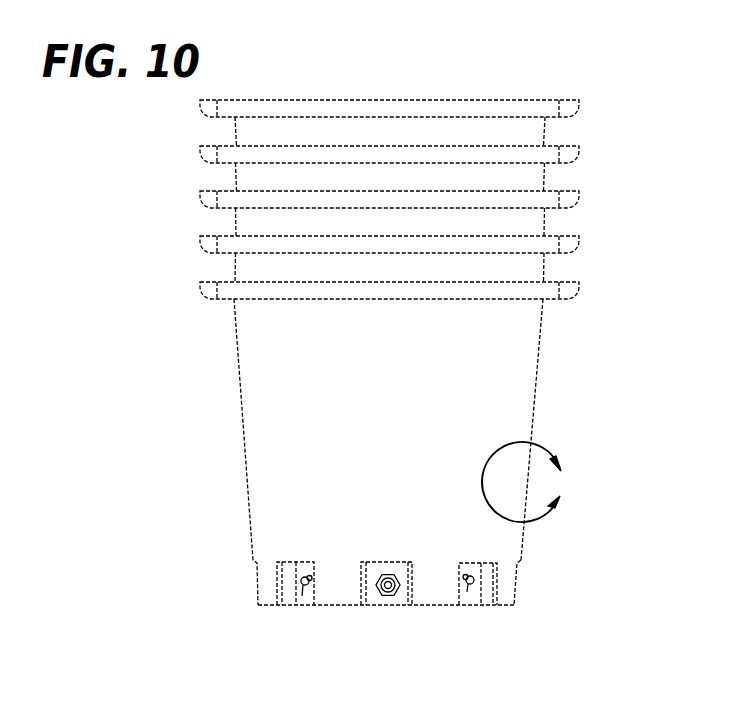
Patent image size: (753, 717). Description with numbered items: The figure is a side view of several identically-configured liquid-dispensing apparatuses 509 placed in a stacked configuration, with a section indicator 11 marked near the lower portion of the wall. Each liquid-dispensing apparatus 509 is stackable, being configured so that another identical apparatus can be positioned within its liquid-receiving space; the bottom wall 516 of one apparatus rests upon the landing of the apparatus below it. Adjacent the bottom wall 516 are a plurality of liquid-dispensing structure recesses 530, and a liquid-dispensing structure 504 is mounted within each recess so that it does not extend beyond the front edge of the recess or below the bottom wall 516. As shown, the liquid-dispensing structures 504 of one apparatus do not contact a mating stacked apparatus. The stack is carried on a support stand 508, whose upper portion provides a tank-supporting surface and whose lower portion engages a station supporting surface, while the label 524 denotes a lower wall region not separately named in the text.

The liquid-dispensing apparatus 509 is at (575, 243).
The support stand 508 is at (532, 375).
The wall lower portion 524 is at (502, 545).
The bottom wall 516 is at (435, 606).
The liquid-dispensing structure 504 is at (302, 596).
The liquid-dispensing structure recess 530 is at (303, 588).
The section view indicator 11 is at (528, 482).